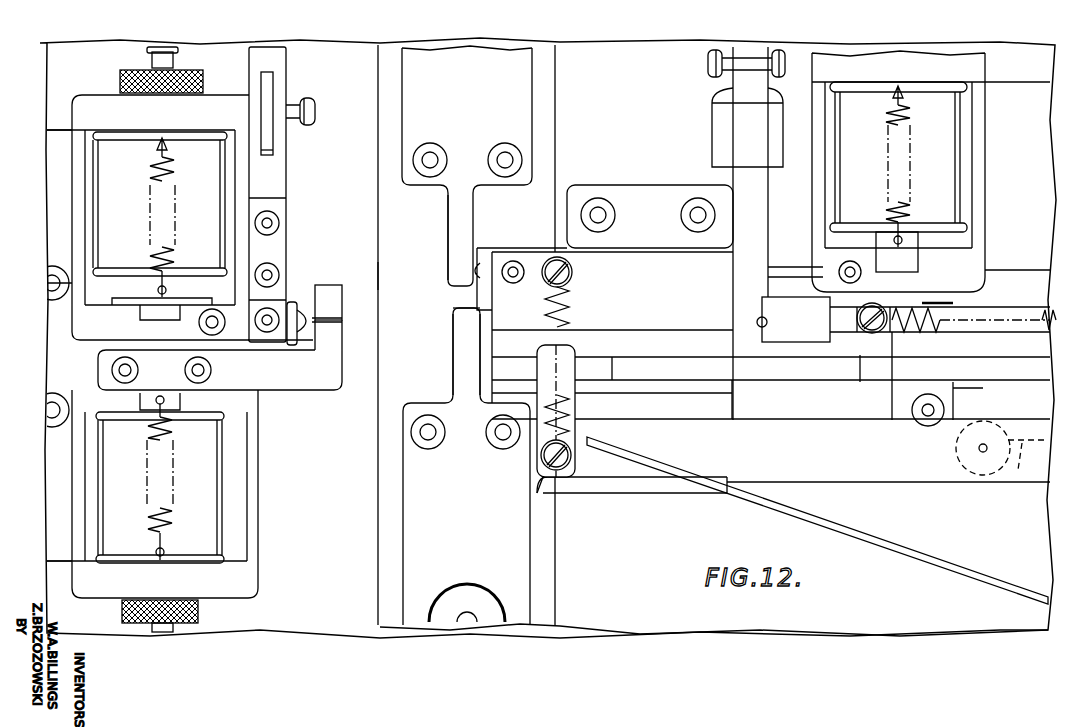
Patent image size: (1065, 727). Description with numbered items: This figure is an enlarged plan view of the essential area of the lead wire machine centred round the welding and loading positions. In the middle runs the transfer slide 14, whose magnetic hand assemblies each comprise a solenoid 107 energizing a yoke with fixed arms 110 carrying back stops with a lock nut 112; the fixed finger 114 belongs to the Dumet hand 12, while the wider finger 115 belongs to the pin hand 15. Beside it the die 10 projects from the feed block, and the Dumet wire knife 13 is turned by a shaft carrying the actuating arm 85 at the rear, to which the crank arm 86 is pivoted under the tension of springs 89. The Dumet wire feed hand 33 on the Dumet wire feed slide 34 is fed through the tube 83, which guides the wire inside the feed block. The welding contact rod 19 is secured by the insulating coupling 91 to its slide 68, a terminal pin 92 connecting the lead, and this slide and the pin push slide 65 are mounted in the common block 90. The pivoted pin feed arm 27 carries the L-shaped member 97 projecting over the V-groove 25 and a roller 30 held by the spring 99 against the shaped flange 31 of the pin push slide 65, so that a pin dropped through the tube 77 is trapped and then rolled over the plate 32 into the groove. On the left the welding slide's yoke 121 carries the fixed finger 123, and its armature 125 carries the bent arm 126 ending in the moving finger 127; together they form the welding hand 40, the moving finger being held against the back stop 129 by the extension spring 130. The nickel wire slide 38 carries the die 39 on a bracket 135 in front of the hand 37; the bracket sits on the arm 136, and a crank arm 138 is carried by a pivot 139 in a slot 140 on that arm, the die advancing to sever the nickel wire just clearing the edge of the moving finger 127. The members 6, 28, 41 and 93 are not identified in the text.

The slide block 6 is at (629, 313).
The die 10 is at (495, 252).
The Dumet hand 12 is at (556, 74).
The Dumet wire knife 13 is at (476, 252).
The transfer slide 14 is at (412, 285).
The pin hand 15 is at (440, 321).
The welding contact rod 19 is at (742, 322).
The V-groove 25 is at (587, 375).
The pin feed arm 27 is at (892, 455).
The rail 28 is at (810, 373).
The roller 30 is at (966, 457).
The shaped flange 31 is at (1027, 458).
The plate 32 is at (712, 403).
The Dumet wire feed hand 33 is at (935, 264).
The Dumet wire feed slide 34 is at (1025, 190).
The hand 37 is at (139, 339).
The nickel wire slide 38 is at (72, 206).
The die 39 is at (300, 300).
The welding hand 40 is at (365, 308).
The frame 41 is at (72, 503).
The pin push slide 65 is at (877, 375).
The slide 68 is at (848, 322).
The tube 77 is at (800, 517).
The tube 83 is at (777, 266).
The actuating arm 85 is at (745, 205).
The crank arm 86 is at (723, 137).
The springs 89 is at (713, 65).
The common block 90 is at (906, 411).
The insulating coupling 91 is at (800, 325).
The terminal pin 92 is at (760, 328).
The spring 93 is at (922, 335).
The L-shaped member 97 is at (577, 406).
The spring 99 is at (568, 312).
The solenoid 107 is at (212, 231).
The fixed arms 110 is at (484, 83).
The lock nut 112 is at (490, 595).
The finger 114 is at (457, 228).
The finger 115 is at (462, 345).
The yoke 121 is at (122, 98).
The finger 123 is at (331, 285).
The armature 125 is at (160, 310).
The bent arm 126 is at (305, 375).
The moving finger 127 is at (330, 345).
The back stop 129 is at (147, 63).
The extension spring 130 is at (152, 185).
The bracket 135 is at (278, 207).
The arm 136 is at (270, 163).
The crank arm 138 is at (330, 111).
The pivot 139 is at (288, 100).
The slot 140 is at (278, 145).